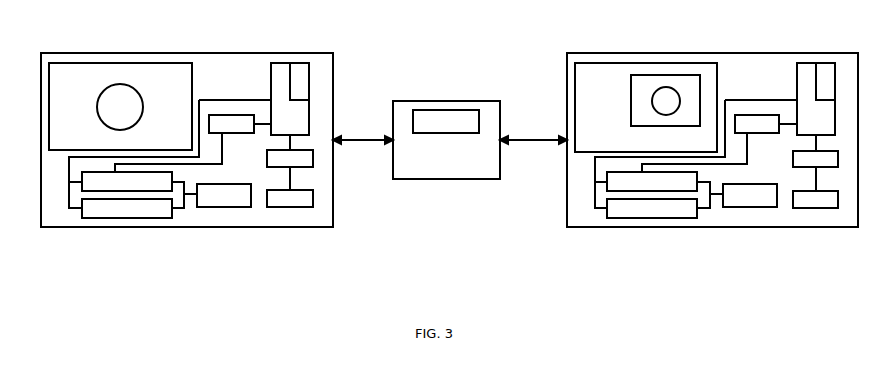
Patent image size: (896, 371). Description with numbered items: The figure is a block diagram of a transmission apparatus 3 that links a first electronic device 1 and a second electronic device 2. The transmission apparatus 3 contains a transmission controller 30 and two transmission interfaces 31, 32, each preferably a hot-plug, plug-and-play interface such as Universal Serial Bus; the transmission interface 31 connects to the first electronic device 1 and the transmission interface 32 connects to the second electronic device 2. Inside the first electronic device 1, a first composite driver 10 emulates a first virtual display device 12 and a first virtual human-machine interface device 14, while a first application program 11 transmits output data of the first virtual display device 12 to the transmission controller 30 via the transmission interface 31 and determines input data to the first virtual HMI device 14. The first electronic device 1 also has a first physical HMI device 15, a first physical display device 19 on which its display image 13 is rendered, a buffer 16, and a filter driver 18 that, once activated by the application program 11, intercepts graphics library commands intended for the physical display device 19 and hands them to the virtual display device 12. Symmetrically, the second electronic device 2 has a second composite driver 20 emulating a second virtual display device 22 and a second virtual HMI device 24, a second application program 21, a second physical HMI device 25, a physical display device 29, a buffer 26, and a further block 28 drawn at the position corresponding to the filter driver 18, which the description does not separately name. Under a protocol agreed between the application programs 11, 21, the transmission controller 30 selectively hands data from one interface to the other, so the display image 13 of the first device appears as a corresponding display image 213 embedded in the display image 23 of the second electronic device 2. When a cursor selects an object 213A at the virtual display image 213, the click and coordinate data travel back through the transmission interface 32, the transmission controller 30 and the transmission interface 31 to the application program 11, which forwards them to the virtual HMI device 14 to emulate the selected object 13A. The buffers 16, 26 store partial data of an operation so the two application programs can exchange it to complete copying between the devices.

The first electronic device 1 is at (185, 227).
The second electronic device 2 is at (712, 227).
The transmission apparatus 3 is at (447, 179).
The first composite driver 10 is at (240, 207).
The first application program 11 is at (283, 63).
The first virtual display device 12 is at (80, 181).
The display image 13 is at (109, 63).
The selected object 13A is at (120, 84).
The first virtual human-machine interface device 14 is at (86, 218).
The first physical HMI device 15 is at (313, 157).
The buffer 16 is at (299, 70).
The filter driver 18 is at (217, 115).
The first physical display device 19 is at (313, 197).
The second composite driver 20 is at (766, 207).
The second application program 21 is at (808, 63).
The second virtual display device 22 is at (605, 181).
The display image 23 is at (632, 63).
The corresponding display image 213 is at (652, 75).
The object 213A is at (677, 90).
The second virtual HMI device 24 is at (612, 218).
The second physical HMI device 25 is at (838, 157).
The buffer 26 is at (825, 70).
The controller of second device 28 is at (742, 115).
The physical display device 29 is at (838, 197).
The transmission controller 30 is at (447, 110).
The transmission interface 31 is at (353, 140).
The transmission interface 32 is at (528, 138).